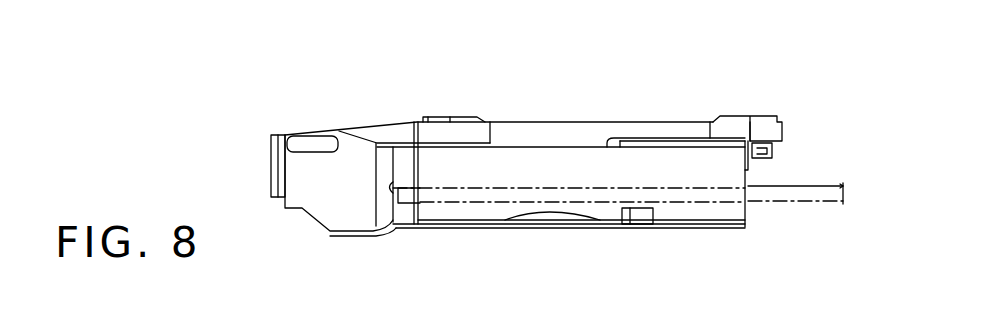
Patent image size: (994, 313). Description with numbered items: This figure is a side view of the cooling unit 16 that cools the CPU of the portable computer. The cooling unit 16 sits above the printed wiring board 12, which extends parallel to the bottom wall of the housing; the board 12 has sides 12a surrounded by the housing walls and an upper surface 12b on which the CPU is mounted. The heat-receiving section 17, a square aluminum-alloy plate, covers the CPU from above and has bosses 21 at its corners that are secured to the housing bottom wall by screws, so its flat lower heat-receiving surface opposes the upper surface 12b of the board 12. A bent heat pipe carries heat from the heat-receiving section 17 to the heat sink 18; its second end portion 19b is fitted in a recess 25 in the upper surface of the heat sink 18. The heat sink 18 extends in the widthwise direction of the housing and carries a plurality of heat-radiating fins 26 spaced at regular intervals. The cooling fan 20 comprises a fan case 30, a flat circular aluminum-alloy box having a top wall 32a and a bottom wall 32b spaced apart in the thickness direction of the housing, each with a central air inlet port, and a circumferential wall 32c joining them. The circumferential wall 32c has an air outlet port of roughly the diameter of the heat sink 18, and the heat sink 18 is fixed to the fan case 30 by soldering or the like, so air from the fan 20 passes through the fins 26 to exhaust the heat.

The printed wiring board 12 is at (785, 205).
The sides of the printed wiring board 12a is at (397, 172).
The upper surface of the printed wiring board 12b is at (822, 186).
The cooling unit 16 is at (533, 105).
The heat-receiving section 17 is at (604, 123).
The heat sink 18 is at (320, 215).
The second end portion of the heat pipe 19b is at (327, 133).
The cooling fan 20 is at (468, 208).
The bosses 21 is at (470, 116).
The recess 25 is at (305, 155).
The heat-radiating fins 26 is at (272, 134).
The fan case 30 is at (603, 214).
The top wall 32a is at (670, 140).
The bottom wall 32b is at (701, 228).
The circumferential wall 32c is at (732, 177).